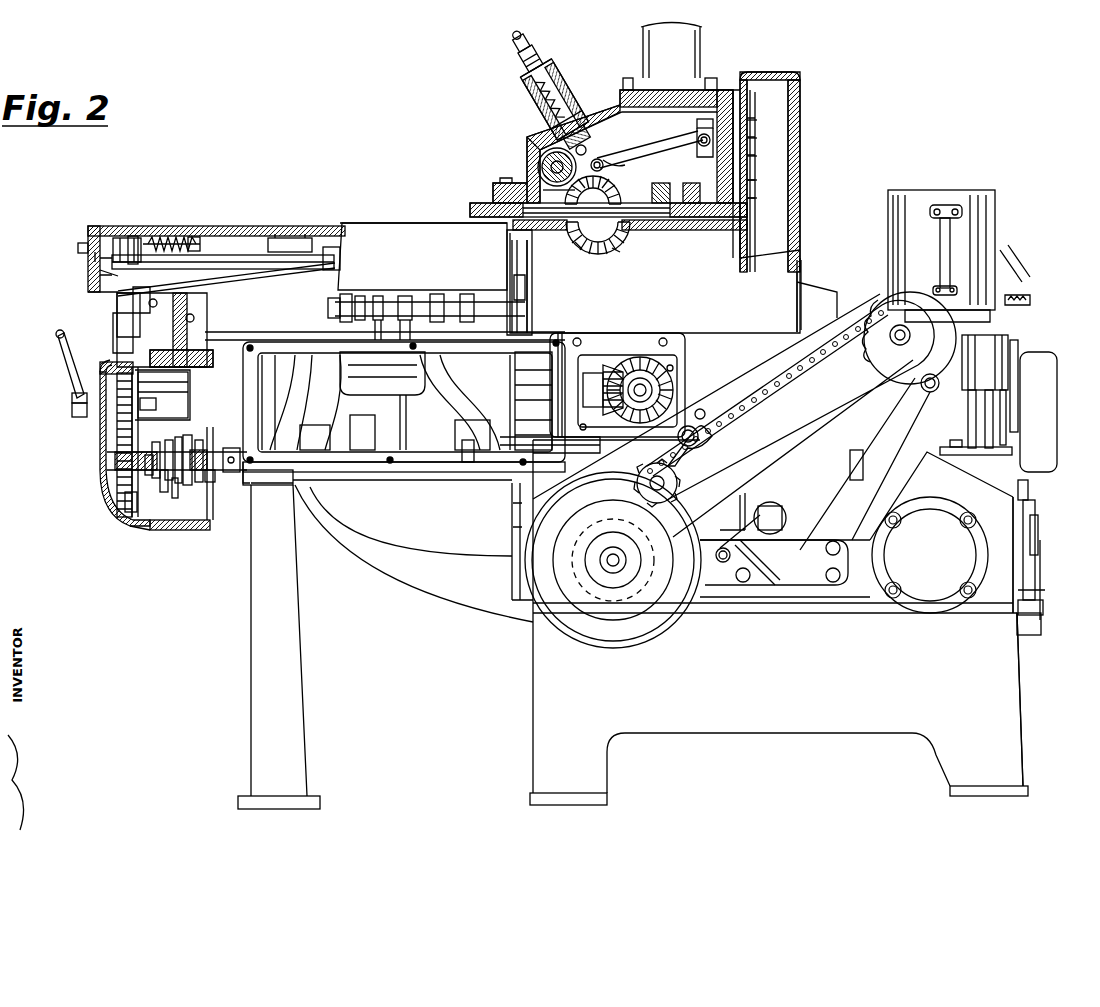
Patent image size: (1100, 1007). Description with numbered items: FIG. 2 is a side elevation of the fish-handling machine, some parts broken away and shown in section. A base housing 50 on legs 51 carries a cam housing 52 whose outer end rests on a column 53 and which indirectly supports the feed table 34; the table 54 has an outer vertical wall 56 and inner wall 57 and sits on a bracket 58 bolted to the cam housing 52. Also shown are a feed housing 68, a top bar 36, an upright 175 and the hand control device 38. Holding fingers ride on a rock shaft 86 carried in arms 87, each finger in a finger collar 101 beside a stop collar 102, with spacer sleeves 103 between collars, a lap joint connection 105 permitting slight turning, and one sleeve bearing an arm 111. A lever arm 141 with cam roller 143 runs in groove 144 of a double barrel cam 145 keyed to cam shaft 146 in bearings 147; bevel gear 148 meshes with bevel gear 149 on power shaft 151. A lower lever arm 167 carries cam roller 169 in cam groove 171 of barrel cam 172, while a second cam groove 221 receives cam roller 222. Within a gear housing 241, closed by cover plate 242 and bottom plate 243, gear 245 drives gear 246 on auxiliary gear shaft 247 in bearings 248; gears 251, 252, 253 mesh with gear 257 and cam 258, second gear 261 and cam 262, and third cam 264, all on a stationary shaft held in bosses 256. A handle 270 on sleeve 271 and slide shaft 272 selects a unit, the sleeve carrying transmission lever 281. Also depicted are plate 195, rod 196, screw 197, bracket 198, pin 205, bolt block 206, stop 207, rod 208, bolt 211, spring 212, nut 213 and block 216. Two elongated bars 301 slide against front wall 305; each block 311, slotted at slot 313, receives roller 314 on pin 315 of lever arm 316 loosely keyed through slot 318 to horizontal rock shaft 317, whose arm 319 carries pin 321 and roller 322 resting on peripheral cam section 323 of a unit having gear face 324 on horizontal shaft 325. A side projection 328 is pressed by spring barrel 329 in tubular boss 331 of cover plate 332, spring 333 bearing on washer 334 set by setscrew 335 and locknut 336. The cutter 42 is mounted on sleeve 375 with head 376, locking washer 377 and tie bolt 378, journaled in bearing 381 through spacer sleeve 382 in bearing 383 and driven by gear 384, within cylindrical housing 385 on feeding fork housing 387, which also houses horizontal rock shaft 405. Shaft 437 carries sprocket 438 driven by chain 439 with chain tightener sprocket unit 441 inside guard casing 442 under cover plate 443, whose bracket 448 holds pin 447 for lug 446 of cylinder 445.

The feed table 34 is at (276, 214).
The top bar 36 is at (238, 226).
The hand control device 38 is at (57, 356).
The cutter 42 is at (745, 100).
The base housing 50 is at (562, 450).
The legs 51 is at (1014, 693).
The cam housing 52 is at (390, 482).
The column 53 is at (252, 616).
The table 54 is at (418, 222).
The outer vertical wall 56 is at (331, 235).
The inner wall 57 is at (384, 230).
The bracket 58 is at (197, 330).
The feed housing 68 is at (664, 90).
The rock shaft 86 is at (328, 306).
The arms 87 is at (428, 300).
The finger collar 101 is at (357, 296).
The stop collar 102 is at (342, 300).
The spacer sleeve 103 is at (398, 298).
The lap joint connection 105 is at (457, 302).
The arm 111 is at (378, 296).
The lever arm 141 is at (360, 445).
The cam roller 143 is at (320, 440).
The groove 144 is at (370, 360).
The double barrel cam 145 is at (305, 420).
The cam shaft 146 is at (141, 408).
The bearings 147 is at (186, 440).
The bevel gear 148 is at (612, 370).
The bevel gear 149 is at (640, 370).
The power shaft 151 is at (648, 388).
The lower lever arm 167 is at (468, 462).
The cam roller 169 is at (478, 450).
The cam groove 171 is at (410, 410).
The barrel cam 172 is at (470, 400).
The upright 175 is at (93, 225).
The plate 195 is at (260, 258).
The rod 196 is at (250, 268).
The screw 197 is at (110, 275).
The bracket 198 is at (118, 318).
The pin 205 is at (95, 257).
The bolt block 206 is at (124, 240).
The stop 207 is at (82, 244).
The rod 208 is at (178, 238).
The bolt 211 is at (134, 236).
The spring 212 is at (166, 238).
The nut 213 is at (195, 237).
The block 216 is at (290, 238).
The second cam groove 221 is at (305, 339).
The cam roller 222 is at (300, 466).
The gear housing 241 is at (130, 500).
The cover plate 242 is at (100, 482).
The bottom plate 243 is at (190, 482).
The gear 245 is at (110, 365).
The gear 246 is at (118, 442).
The auxiliary gear shaft 247 is at (252, 496).
The bearings 248 is at (120, 456).
The gear 251 is at (150, 462).
The gear 252 is at (168, 482).
The gear 253 is at (198, 440).
The bosses 256 is at (210, 482).
The gear 257 is at (162, 490).
The cam 258 is at (165, 443).
The second gear 261 is at (175, 498).
The cam 262 is at (190, 430).
The third cam 264 is at (204, 531).
The handle 270 is at (60, 340).
The sleeve 271 is at (73, 394).
The slide shaft 272 is at (73, 404).
The transmission lever 281 is at (150, 395).
The elongated bars 301 is at (750, 122).
The front wall 305 is at (750, 139).
The block 311 is at (712, 128).
The slot 313 is at (750, 156).
The roller 314 is at (703, 155).
The pin 315 is at (698, 138).
The lever arm 316 is at (652, 142).
The horizontal rock shaft 317 is at (540, 158).
The slot 318 is at (542, 170).
The arm 319 is at (603, 178).
The pin 321 is at (603, 160).
The roller 322 is at (614, 165).
The peripheral cam section 323 is at (560, 192).
The gear face 324 is at (607, 252).
The horizontal shaft 325 is at (616, 252).
The side projection 328 is at (584, 147).
The spring barrel 329 is at (535, 140).
The tubular boss 331 is at (515, 76).
The cover plate 332 is at (582, 102).
The spring 333 is at (558, 82).
The washer 334 is at (546, 66).
The setscrew 335 is at (521, 48).
The locknut 336 is at (514, 58).
The sleeve 375 is at (690, 200).
The head 376 is at (747, 212).
The locking washer 377 is at (750, 180).
The tie bolt 378 is at (750, 198).
The bearing 381 is at (690, 231).
The spacer sleeve 382 is at (583, 249).
The bearing 383 is at (555, 233).
The gear 384 is at (656, 200).
The cylindrical housing 385 is at (801, 93).
The feeding fork housing 387 is at (906, 464).
The horizontal rock shaft 405 is at (866, 458).
The shaft 437 is at (904, 343).
The sprocket 438 is at (898, 312).
The chain 439 is at (800, 396).
The chain tightener sprocket unit 441 is at (650, 472).
The guard casing 442 is at (816, 326).
The cover plate 443 is at (615, 574).
The cylinder 445 is at (808, 447).
The lug 446 is at (772, 534).
The pin 447 is at (786, 518).
The bracket 448 is at (723, 548).